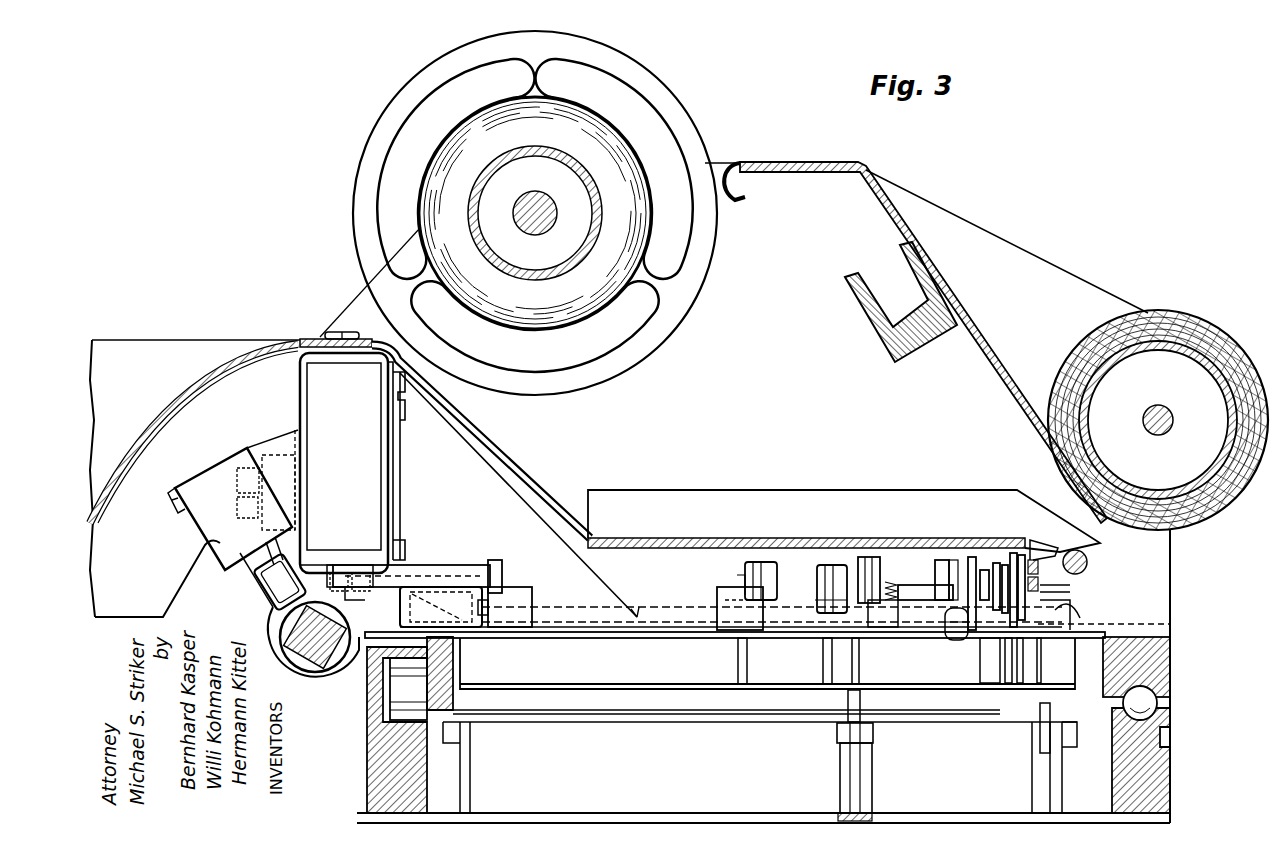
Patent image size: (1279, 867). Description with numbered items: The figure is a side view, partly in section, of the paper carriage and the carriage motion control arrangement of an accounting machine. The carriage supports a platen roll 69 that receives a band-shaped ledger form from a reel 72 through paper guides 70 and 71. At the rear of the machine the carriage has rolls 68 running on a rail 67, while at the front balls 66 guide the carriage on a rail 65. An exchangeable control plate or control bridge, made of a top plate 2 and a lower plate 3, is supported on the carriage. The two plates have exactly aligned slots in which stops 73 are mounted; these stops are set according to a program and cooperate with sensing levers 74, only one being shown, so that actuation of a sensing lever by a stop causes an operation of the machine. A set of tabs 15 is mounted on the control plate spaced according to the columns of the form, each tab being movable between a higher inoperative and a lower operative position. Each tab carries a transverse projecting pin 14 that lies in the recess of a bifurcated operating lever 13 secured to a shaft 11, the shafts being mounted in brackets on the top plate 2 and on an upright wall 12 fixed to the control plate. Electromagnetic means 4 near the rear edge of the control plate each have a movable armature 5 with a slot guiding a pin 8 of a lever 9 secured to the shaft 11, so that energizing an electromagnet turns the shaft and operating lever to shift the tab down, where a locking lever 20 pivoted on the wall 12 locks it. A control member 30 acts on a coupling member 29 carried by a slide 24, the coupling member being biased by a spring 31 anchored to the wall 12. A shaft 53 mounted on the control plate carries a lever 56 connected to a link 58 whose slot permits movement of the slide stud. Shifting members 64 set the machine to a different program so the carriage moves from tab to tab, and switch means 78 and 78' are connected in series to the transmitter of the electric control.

The top plate 2 is at (555, 636).
The lower plate 3 is at (546, 687).
The electromagnetic means 4 is at (403, 476).
The movable armature 5 is at (377, 596).
The pin 8 is at (358, 652).
The lever 9 is at (456, 598).
The shaft 11 is at (560, 615).
The upright wall 12 is at (1020, 640).
The operating lever 13 is at (1062, 602).
The transverse projecting pin 14 is at (1060, 588).
The tab 15 is at (1088, 566).
The locking lever 20 is at (1032, 548).
The slide 24 is at (993, 612).
The coupling member 29 is at (985, 575).
The control member 30 is at (970, 580).
The spring 31 is at (1004, 570).
The shaft 53 is at (873, 620).
The lever 56 is at (920, 585).
The link 58 is at (942, 576).
The shifting members 64 is at (783, 555).
The rail 65 is at (1166, 755).
The balls 66 is at (1171, 680).
The rail 67 is at (382, 762).
The rolls 68 is at (397, 690).
The platen roll 69 is at (1168, 315).
The paper guide 70 is at (958, 328).
The paper guide 71 is at (532, 483).
The reel 72 is at (440, 133).
The stops 73 is at (850, 680).
The sensing lever 74 is at (861, 706).
The switch means 78 is at (344, 472).
The switch means 78' is at (233, 500).